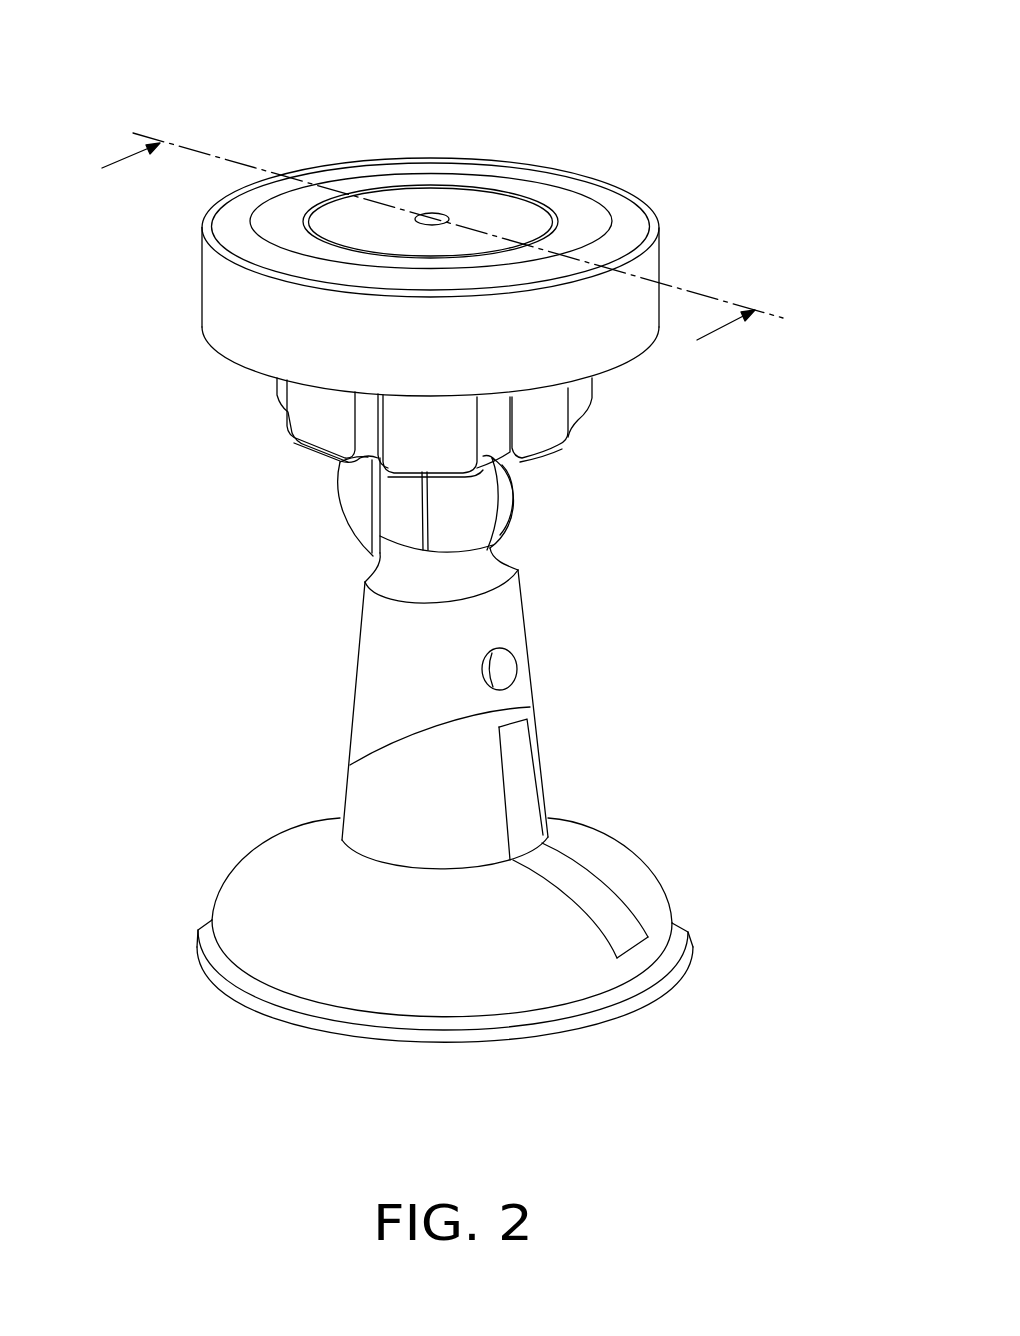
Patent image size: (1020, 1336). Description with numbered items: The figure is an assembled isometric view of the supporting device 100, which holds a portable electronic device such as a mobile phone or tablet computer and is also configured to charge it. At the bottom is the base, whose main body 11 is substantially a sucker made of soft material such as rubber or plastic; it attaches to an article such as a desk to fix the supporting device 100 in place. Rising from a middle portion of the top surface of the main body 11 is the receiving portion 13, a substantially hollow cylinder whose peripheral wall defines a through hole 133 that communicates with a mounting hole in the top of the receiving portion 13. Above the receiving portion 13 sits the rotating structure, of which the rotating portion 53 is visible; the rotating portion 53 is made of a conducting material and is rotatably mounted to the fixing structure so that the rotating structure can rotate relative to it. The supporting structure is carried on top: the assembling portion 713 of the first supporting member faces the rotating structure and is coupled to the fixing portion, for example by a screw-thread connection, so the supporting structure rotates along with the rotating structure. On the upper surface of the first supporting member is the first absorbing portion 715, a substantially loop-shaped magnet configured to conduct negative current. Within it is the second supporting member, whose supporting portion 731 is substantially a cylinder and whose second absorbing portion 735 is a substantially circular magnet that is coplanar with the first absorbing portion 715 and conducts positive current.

The supporting device 100 is at (414, 33).
The main body 11 is at (628, 873).
The receiving portion 13 is at (370, 803).
The through hole 133 is at (505, 666).
The rotating portion 53 is at (480, 510).
The assembling portion 713 is at (550, 438).
The first absorbing portion 715 is at (388, 182).
The supporting portion 731 is at (557, 227).
The second absorbing portion 735 is at (495, 208).